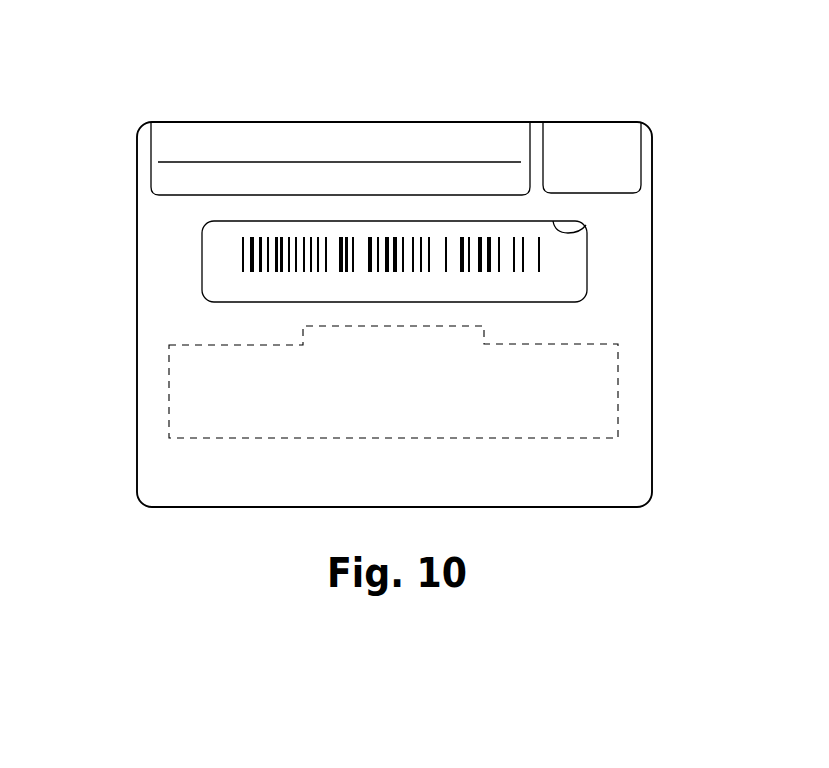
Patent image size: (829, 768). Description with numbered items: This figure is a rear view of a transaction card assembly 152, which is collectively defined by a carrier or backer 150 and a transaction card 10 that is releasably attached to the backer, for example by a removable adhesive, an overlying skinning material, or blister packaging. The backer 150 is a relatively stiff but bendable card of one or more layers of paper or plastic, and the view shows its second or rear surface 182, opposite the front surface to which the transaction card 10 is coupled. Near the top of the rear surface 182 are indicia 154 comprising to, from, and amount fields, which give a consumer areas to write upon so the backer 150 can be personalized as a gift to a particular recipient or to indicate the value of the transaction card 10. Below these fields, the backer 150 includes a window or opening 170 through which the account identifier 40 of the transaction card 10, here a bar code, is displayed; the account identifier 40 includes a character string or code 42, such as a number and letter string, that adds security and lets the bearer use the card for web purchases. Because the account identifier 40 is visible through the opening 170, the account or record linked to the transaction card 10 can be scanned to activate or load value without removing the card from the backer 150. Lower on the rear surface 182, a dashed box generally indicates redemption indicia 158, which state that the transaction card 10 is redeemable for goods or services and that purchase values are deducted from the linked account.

The transaction card assembly 152 is at (144, 70).
The backer 150 is at (130, 116).
The indicia 154 is at (212, 143).
The transaction card 10 is at (575, 253).
The opening 170 is at (580, 230).
The account identifier 40 is at (243, 251).
The character string or code 42 is at (222, 287).
The rear surface 182 is at (640, 362).
The redemption indicia 158 is at (618, 403).